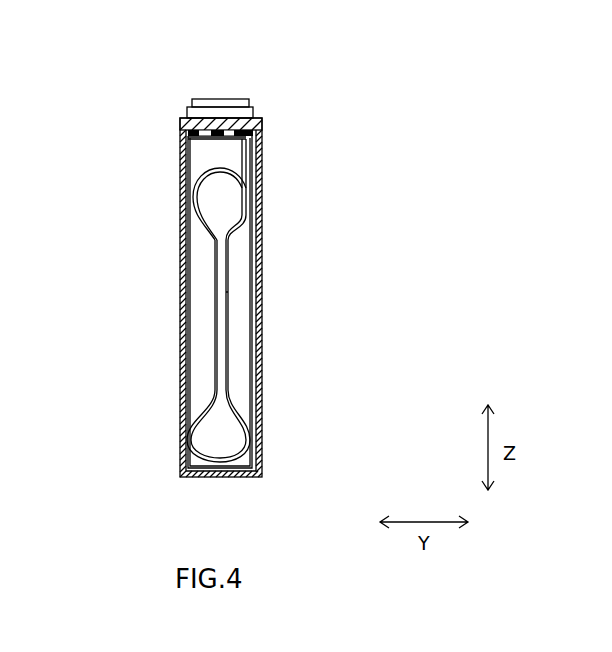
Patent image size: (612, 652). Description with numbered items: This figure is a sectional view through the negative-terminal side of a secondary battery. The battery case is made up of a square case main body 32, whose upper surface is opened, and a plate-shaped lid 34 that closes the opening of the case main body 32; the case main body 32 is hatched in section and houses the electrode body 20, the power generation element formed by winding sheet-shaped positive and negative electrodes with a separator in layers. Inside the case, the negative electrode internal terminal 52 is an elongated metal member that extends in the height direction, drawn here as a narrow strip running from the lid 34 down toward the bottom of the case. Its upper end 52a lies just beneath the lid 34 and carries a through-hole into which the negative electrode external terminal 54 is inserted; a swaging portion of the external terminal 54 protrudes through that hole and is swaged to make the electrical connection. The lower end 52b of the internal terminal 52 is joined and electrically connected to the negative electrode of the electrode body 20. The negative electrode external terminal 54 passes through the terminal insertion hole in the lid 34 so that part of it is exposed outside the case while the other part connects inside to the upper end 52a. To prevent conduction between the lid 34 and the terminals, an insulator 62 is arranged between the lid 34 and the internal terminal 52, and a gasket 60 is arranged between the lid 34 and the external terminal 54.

The electrode body 20 is at (258, 407).
The case main body 32 is at (262, 335).
The lid 34 is at (258, 117).
The negative electrode external terminal 54 is at (226, 96).
The gasket 60 is at (188, 117).
The insulator 62 is at (253, 133).
The negative electrode internal terminal 52 is at (250, 165).
The upper end 52a is at (203, 140).
The lower end 52b is at (228, 272).